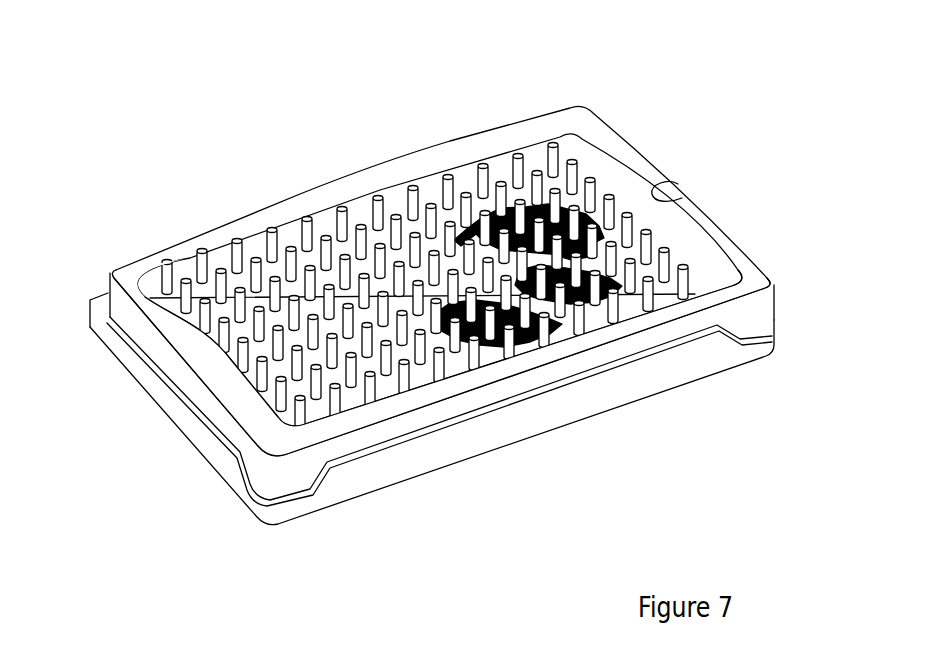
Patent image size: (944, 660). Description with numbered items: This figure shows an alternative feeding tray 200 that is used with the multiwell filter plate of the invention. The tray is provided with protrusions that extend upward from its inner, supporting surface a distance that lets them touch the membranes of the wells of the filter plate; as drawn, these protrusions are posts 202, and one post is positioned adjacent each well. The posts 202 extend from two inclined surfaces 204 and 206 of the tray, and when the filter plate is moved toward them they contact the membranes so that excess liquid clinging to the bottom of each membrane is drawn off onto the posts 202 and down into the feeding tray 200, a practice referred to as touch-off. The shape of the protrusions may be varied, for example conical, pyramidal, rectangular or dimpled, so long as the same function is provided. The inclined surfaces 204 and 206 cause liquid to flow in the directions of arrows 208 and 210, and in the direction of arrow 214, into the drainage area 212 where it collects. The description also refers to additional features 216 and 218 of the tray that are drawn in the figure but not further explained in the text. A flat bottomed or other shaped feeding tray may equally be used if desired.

The feeding tray 200 is at (742, 215).
The posts 202 is at (395, 214).
The inclined surface 204 is at (268, 265).
The inclined surface 206 is at (454, 363).
The arrow 208 is at (550, 250).
The arrow 210 is at (535, 350).
The drainage area 212 is at (724, 290).
The arrow 214 is at (602, 256).
The alignment hole 216 is at (197, 340).
The orientation tab 218 is at (668, 194).